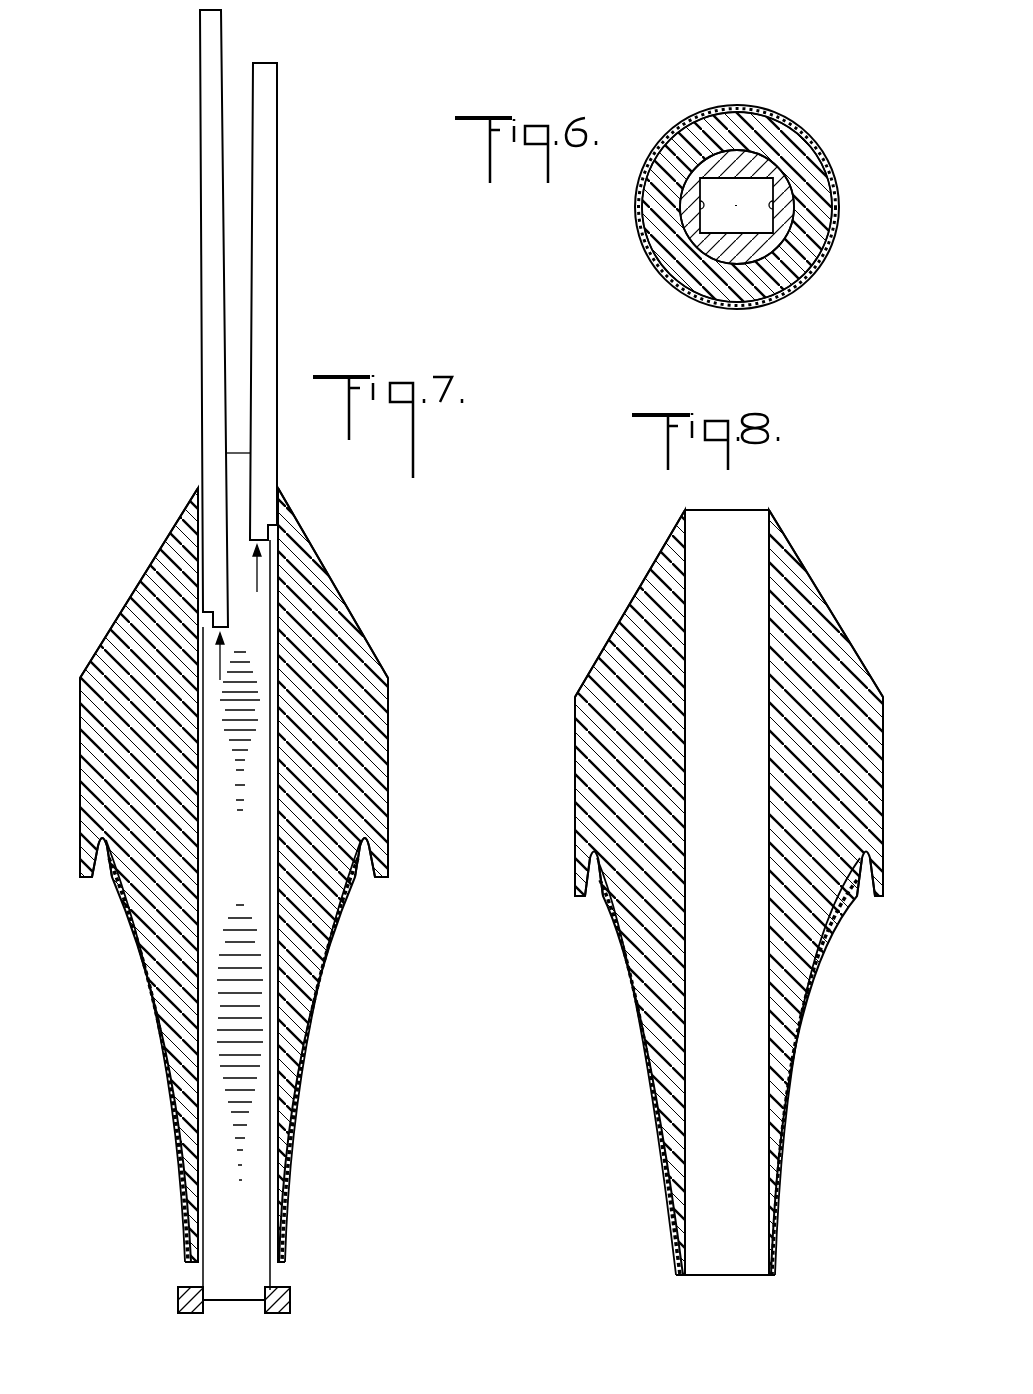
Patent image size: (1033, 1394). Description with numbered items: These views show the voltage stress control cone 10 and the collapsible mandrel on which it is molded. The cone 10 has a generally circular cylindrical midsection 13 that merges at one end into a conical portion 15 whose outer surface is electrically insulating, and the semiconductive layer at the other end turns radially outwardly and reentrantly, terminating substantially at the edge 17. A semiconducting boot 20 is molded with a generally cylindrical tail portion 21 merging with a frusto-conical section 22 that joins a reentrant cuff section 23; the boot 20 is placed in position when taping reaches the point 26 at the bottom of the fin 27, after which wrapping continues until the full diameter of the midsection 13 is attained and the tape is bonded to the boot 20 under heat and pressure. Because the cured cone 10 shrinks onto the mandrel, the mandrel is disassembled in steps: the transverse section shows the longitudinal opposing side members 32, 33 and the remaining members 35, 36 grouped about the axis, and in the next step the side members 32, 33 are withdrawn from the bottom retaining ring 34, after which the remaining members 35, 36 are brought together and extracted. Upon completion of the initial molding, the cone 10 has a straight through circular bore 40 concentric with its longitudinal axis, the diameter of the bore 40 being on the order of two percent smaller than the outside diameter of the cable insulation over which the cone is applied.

In FIG. 7, the voltage stress control cone 10 is at (400, 670).
In FIG. 8, the voltage stress control cone 10 is at (562, 665).
In FIG. 7, the circular cylindrical midsection 13 is at (386, 756).
In FIG. 8, the circular cylindrical midsection 13 is at (574, 754).
In FIG. 7, the conical portion 15 is at (365, 650).
In FIG. 8, the conical portion 15 is at (640, 610).
In FIG. 7, the edge 17 is at (95, 878).
In FIG. 8, the edge 17 is at (852, 900).
In FIG. 7, the boot 20 is at (146, 1012).
In FIG. 8, the boot 20 is at (646, 1072).
In FIG. 7, the cylindrical tail portion 21 is at (286, 1176).
In FIG. 8, the cylindrical tail portion 21 is at (672, 1210).
In FIG. 6, the frusto-conical section 22 is at (785, 300).
In FIG. 7, the frusto-conical section 22 is at (322, 1012).
In FIG. 8, the frusto-conical section 22 is at (632, 1015).
In FIG. 7, the reentrant cuff section 23 is at (368, 870).
In FIG. 8, the reentrant cuff section 23 is at (588, 893).
In FIG. 7, the point 26 is at (372, 830).
In FIG. 7, the fin 27 is at (392, 851).
In FIG. 8, the fin 27 is at (580, 863).
In FIG. 6, the longitudinal opposing side member 32 is at (698, 205).
In FIG. 7, the longitudinal opposing side member 32 is at (215, 314).
In FIG. 6, the longitudinal opposing side member 33 is at (770, 205).
In FIG. 7, the longitudinal opposing side member 33 is at (270, 315).
In FIG. 7, the bottom retaining ring 34 is at (290, 1292).
In FIG. 6, the remaining member 35 is at (745, 165).
In FIG. 7, the remaining member 35 is at (255, 602).
In FIG. 6, the remaining member 36 is at (770, 250).
In FIG. 8, the straight through circular bore 40 is at (698, 522).